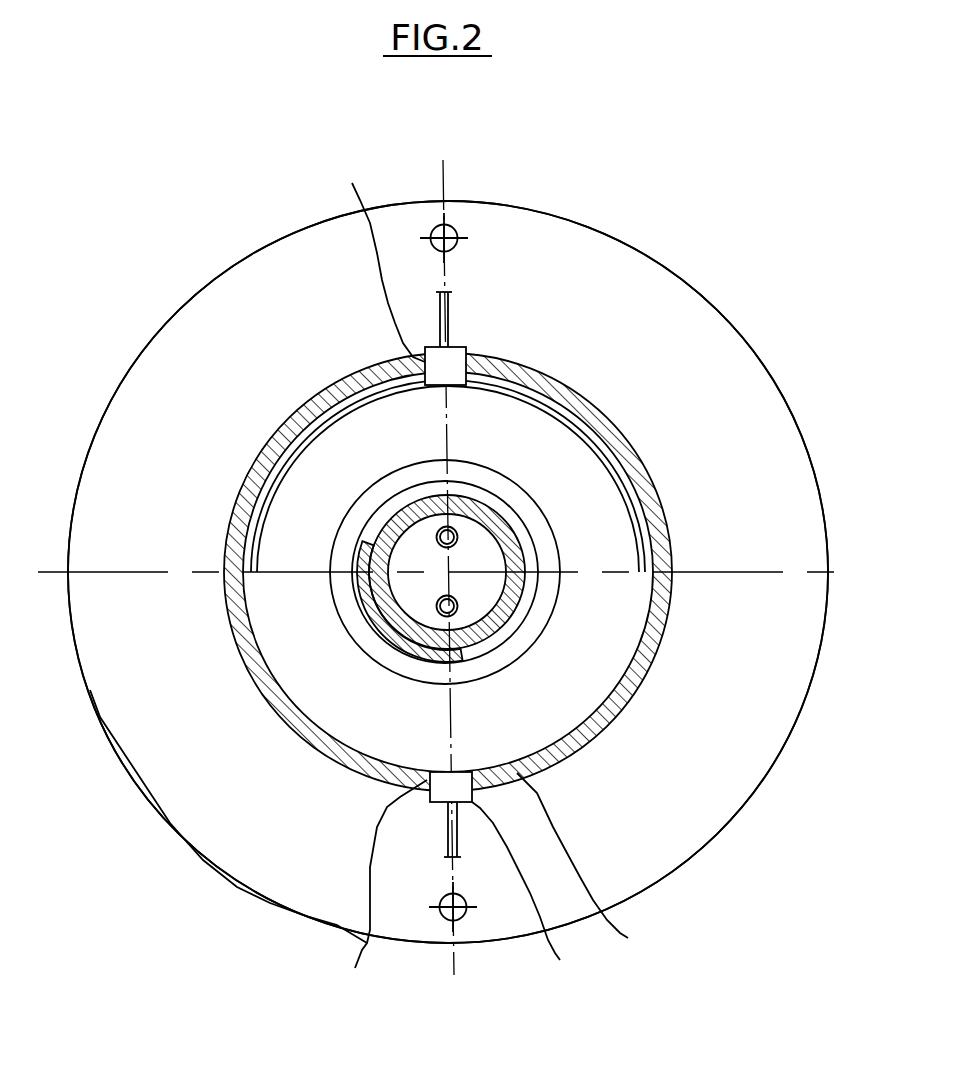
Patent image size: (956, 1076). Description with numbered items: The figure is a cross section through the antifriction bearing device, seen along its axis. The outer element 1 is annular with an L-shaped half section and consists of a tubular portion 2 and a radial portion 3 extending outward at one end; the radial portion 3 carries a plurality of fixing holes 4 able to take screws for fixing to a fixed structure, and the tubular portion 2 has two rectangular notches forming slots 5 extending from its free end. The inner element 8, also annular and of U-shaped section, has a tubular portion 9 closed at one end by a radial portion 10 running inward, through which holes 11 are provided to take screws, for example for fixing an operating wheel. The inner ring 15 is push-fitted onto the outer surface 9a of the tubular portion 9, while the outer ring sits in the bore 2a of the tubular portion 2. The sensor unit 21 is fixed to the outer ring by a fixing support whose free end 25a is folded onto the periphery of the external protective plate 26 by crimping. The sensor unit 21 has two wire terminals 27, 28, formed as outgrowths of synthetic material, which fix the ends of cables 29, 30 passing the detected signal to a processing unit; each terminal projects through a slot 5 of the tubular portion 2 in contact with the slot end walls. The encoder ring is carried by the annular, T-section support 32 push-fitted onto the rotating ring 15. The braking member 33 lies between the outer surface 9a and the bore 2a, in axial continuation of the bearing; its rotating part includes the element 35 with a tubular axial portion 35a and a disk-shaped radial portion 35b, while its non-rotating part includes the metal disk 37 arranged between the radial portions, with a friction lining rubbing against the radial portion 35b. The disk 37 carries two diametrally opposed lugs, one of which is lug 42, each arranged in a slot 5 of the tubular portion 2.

The outer element 1 is at (240, 248).
The tubular portion 2 is at (412, 522).
The bore 2a is at (378, 429).
The radial portion 3 is at (308, 257).
The fixing holes 4 is at (434, 575).
The slots 5 is at (258, 575).
The inner element 8 is at (325, 503).
The tubular portion 9 is at (293, 508).
The outer surface 9a is at (251, 539).
The radial portion 10 is at (607, 542).
The holes 11 is at (654, 540).
The inner ring 15 is at (580, 353).
The sensor unit 21 is at (677, 353).
The free end of the support 25a is at (699, 439).
The external protective plate 26 is at (690, 397).
The wire terminal 27 is at (527, 266).
The wire terminal 28 is at (535, 892).
The cable 29 is at (476, 271).
The cable 30 is at (478, 882).
The support 32 is at (618, 363).
The braking member 33 is at (269, 834).
The element 35 is at (207, 690).
The tubular axial portion 35a is at (227, 734).
The radial portion 35b is at (249, 747).
The metal disk 37 is at (173, 660).
The lug 42 is at (588, 865).